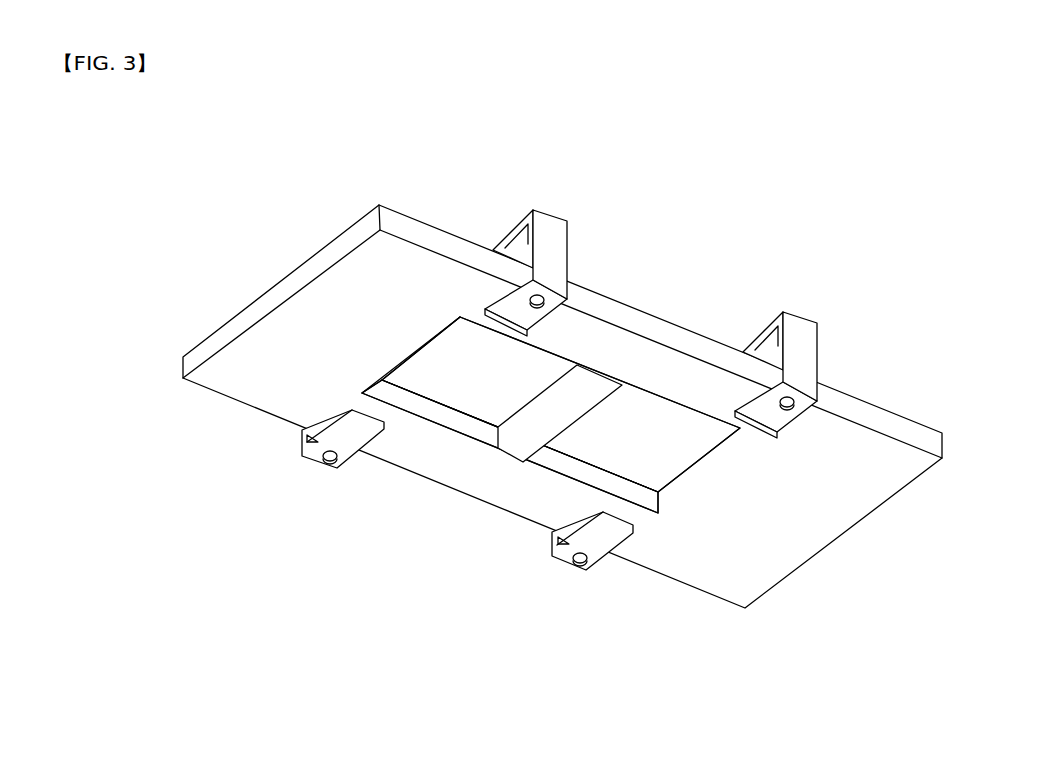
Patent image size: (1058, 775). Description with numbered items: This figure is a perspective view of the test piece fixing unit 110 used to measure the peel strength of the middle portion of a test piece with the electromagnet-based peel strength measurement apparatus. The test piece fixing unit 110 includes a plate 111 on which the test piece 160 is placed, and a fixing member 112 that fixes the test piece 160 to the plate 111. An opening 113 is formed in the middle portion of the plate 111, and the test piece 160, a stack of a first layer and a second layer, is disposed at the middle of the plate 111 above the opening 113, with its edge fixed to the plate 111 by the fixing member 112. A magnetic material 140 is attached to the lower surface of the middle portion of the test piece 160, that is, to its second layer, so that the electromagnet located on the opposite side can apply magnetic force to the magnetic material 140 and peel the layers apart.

The test piece fixing unit 110 is at (172, 170).
The plate 111 is at (583, 328).
The fixing member 112 is at (798, 347).
The opening 113 is at (437, 420).
The magnetic material 140 is at (517, 450).
The test piece 160 is at (652, 443).